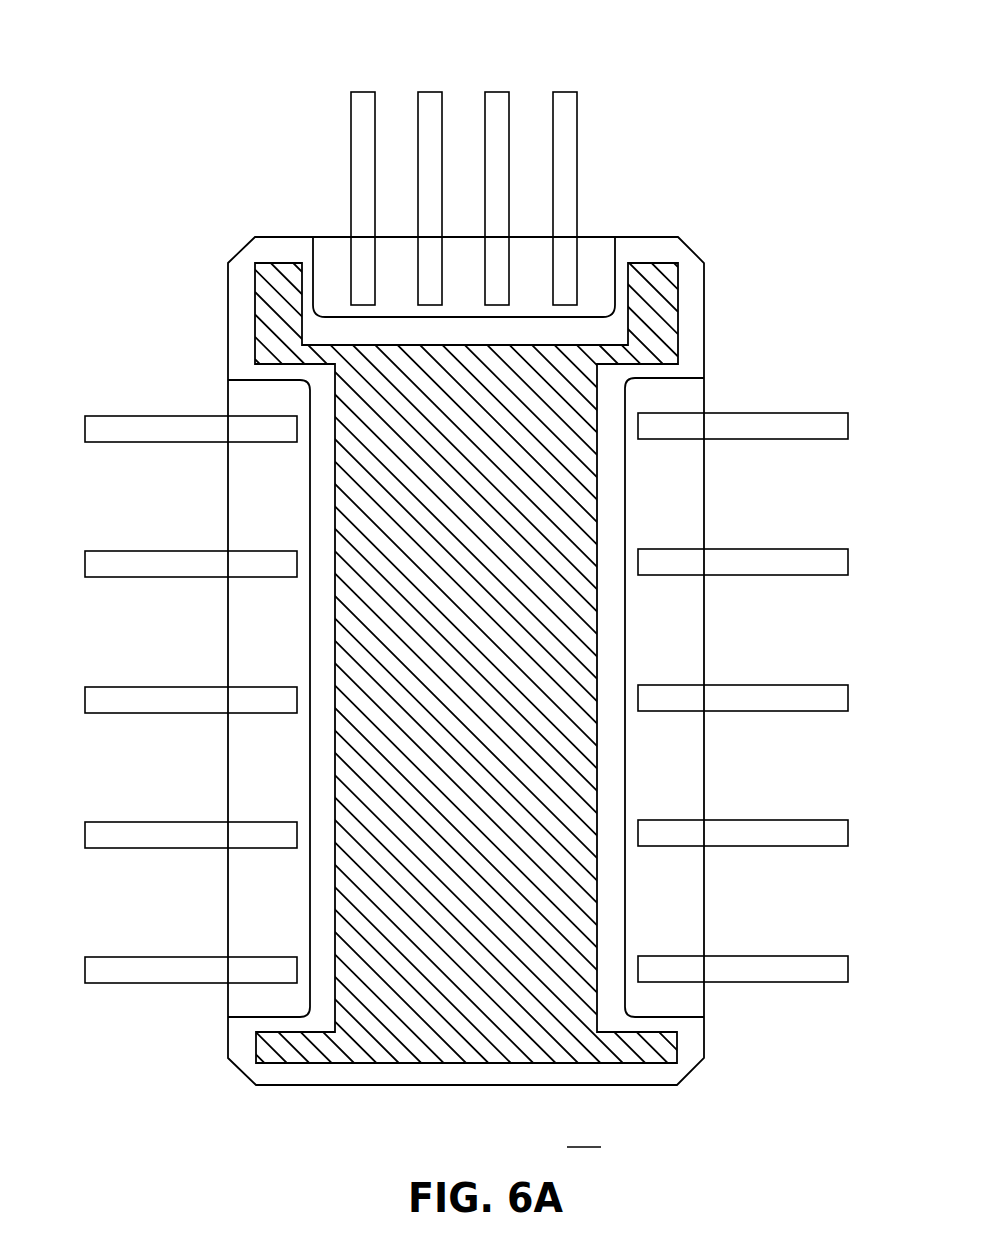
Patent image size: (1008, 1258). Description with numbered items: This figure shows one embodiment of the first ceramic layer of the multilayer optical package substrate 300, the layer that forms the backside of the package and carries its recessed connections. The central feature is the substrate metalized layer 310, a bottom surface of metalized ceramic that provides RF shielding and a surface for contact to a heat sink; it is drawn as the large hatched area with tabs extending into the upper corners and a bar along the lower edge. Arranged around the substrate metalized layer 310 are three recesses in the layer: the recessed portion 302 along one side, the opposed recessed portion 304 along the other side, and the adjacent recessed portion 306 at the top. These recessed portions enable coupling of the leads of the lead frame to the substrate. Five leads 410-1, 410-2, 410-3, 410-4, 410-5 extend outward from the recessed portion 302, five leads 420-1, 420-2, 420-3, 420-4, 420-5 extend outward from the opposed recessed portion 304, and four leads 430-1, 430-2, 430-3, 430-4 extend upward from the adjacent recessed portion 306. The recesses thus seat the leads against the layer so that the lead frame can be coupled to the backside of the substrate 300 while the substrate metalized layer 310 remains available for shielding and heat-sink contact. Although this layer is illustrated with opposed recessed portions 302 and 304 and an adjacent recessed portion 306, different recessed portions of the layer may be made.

The optical package substrate 300 is at (184, 214).
The recessed portion 302 is at (690, 398).
The recessed portion 304 is at (243, 402).
The recessed portion 306 is at (600, 247).
The substrate metalized layer 310 is at (672, 310).
The lead 410-1 is at (802, 956).
The lead 410-2 is at (802, 820).
The lead 410-3 is at (808, 685).
The lead 410-4 is at (817, 549).
The lead 410-5 is at (807, 413).
The lead 420-1 is at (132, 957).
The lead 420-2 is at (132, 822).
The lead 420-3 is at (129, 687).
The lead 420-4 is at (131, 551).
The lead 420-5 is at (128, 416).
The lead 430-1 is at (360, 92).
The lead 430-2 is at (428, 92).
The lead 430-3 is at (495, 92).
The lead 430-4 is at (563, 92).